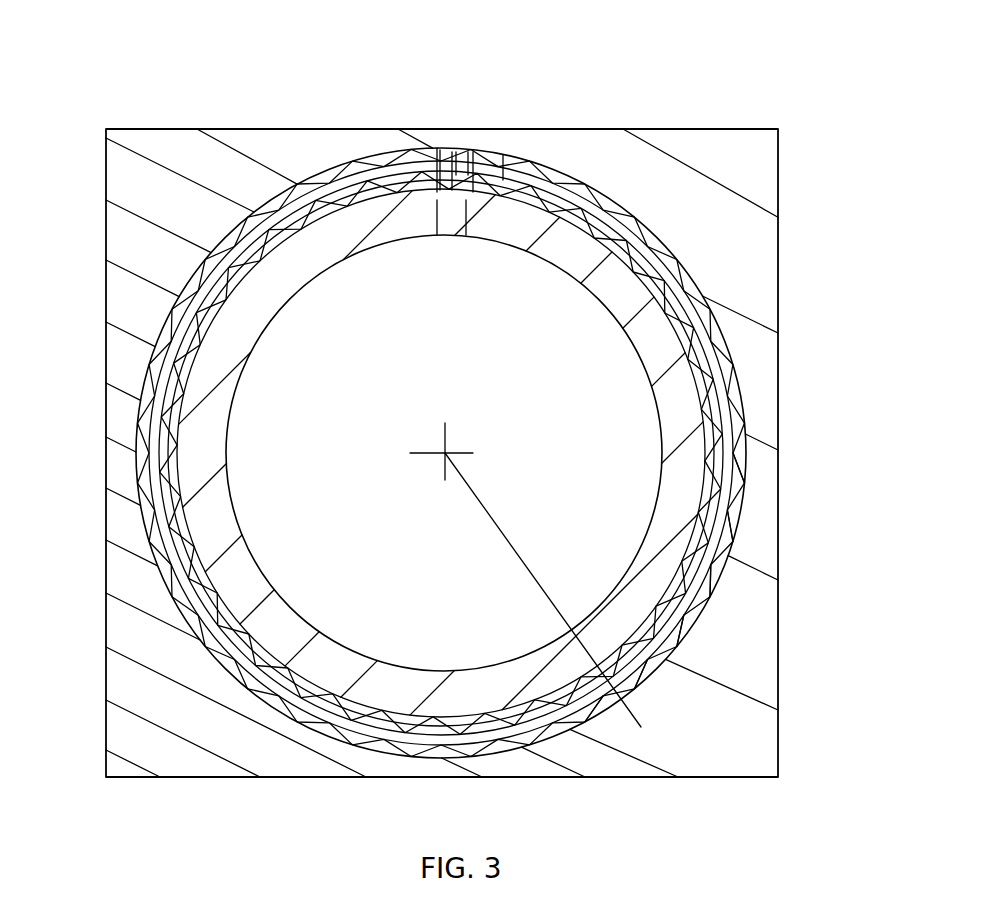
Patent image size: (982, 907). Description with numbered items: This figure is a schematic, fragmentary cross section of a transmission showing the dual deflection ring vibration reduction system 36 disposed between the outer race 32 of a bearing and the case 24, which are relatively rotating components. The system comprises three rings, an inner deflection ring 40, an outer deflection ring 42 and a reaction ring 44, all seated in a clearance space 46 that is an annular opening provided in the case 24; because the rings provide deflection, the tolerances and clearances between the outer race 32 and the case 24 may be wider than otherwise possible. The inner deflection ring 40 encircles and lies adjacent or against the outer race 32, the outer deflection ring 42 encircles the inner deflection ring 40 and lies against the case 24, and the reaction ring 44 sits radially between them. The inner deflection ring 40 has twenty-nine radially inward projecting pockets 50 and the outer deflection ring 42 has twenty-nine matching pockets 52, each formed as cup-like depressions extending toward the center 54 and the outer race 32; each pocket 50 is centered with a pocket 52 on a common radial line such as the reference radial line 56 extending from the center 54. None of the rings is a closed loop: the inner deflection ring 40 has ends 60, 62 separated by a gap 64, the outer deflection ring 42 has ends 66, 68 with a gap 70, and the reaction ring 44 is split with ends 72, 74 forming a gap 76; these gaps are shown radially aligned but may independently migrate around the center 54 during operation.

The case 24 is at (143, 243).
The outer race 32 is at (245, 570).
The dual deflection ring vibration reduction system 36 is at (747, 463).
The inner deflection ring 40 is at (668, 395).
The outer deflection ring 42 is at (677, 250).
The reaction ring 44 is at (726, 407).
The clearance space 46 is at (297, 220).
The pockets 50 is at (737, 300).
The pockets 52 is at (742, 492).
The center 54 is at (448, 451).
The reference radial line 56 is at (506, 550).
The end 60 is at (441, 230).
The end 62 is at (505, 233).
The gap 64 is at (440, 190).
The end 66 is at (445, 152).
The end 68 is at (473, 152).
The gap 70 is at (468, 152).
The end 72 is at (456, 152).
The end 74 is at (452, 190).
The gap 76 is at (503, 155).